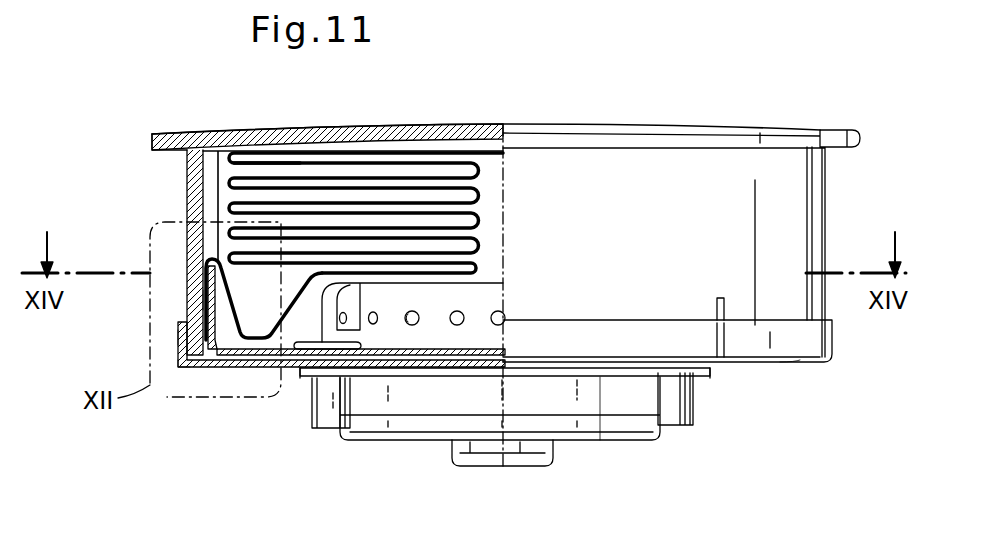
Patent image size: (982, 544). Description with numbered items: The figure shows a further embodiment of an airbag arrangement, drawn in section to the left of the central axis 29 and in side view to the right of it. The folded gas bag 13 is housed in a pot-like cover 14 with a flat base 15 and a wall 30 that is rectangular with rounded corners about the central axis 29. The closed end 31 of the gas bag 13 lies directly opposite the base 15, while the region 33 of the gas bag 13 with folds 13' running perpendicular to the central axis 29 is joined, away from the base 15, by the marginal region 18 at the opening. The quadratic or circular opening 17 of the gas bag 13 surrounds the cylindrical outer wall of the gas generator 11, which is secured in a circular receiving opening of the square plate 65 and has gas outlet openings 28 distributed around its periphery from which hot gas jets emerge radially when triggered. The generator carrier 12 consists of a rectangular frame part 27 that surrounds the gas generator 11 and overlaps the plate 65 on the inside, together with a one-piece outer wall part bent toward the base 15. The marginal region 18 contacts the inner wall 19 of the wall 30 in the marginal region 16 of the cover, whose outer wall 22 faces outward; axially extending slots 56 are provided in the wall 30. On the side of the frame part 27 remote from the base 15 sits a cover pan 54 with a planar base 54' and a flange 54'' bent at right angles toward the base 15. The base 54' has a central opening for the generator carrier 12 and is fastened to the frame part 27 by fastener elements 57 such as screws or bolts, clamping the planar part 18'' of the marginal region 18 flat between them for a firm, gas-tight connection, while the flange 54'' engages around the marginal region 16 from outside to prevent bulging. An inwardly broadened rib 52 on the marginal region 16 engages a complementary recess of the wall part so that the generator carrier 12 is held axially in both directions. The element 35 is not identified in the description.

The gas generator 11 is at (428, 402).
The generator carrier 12 is at (265, 370).
The gas bag 13 is at (366, 166).
The folds 13' is at (265, 118).
The cover 14 is at (638, 123).
The base 15 is at (550, 128).
The marginal region of the cover 16 is at (181, 318).
The opening 17 is at (398, 343).
The marginal region at the opening 18 is at (264, 299).
The planar part 18'' is at (481, 436).
The inner wall 19 is at (205, 272).
The outer wall 22 is at (186, 300).
The frame part 27 is at (505, 320).
The gas outlet openings 28 is at (420, 316).
The central axis 29 is at (505, 190).
The wall 30 is at (192, 168).
The closed end 31 is at (468, 137).
The region of the gas bag having folds 33 is at (200, 200).
The flange end 35 is at (170, 132).
The rib 52 is at (198, 371).
The cover pan 54 is at (487, 400).
The planar base 54' is at (312, 391).
The flange 54'' is at (129, 350).
The slots 56 is at (716, 303).
The fastener elements 57 is at (327, 415).
The plate 65 is at (605, 373).